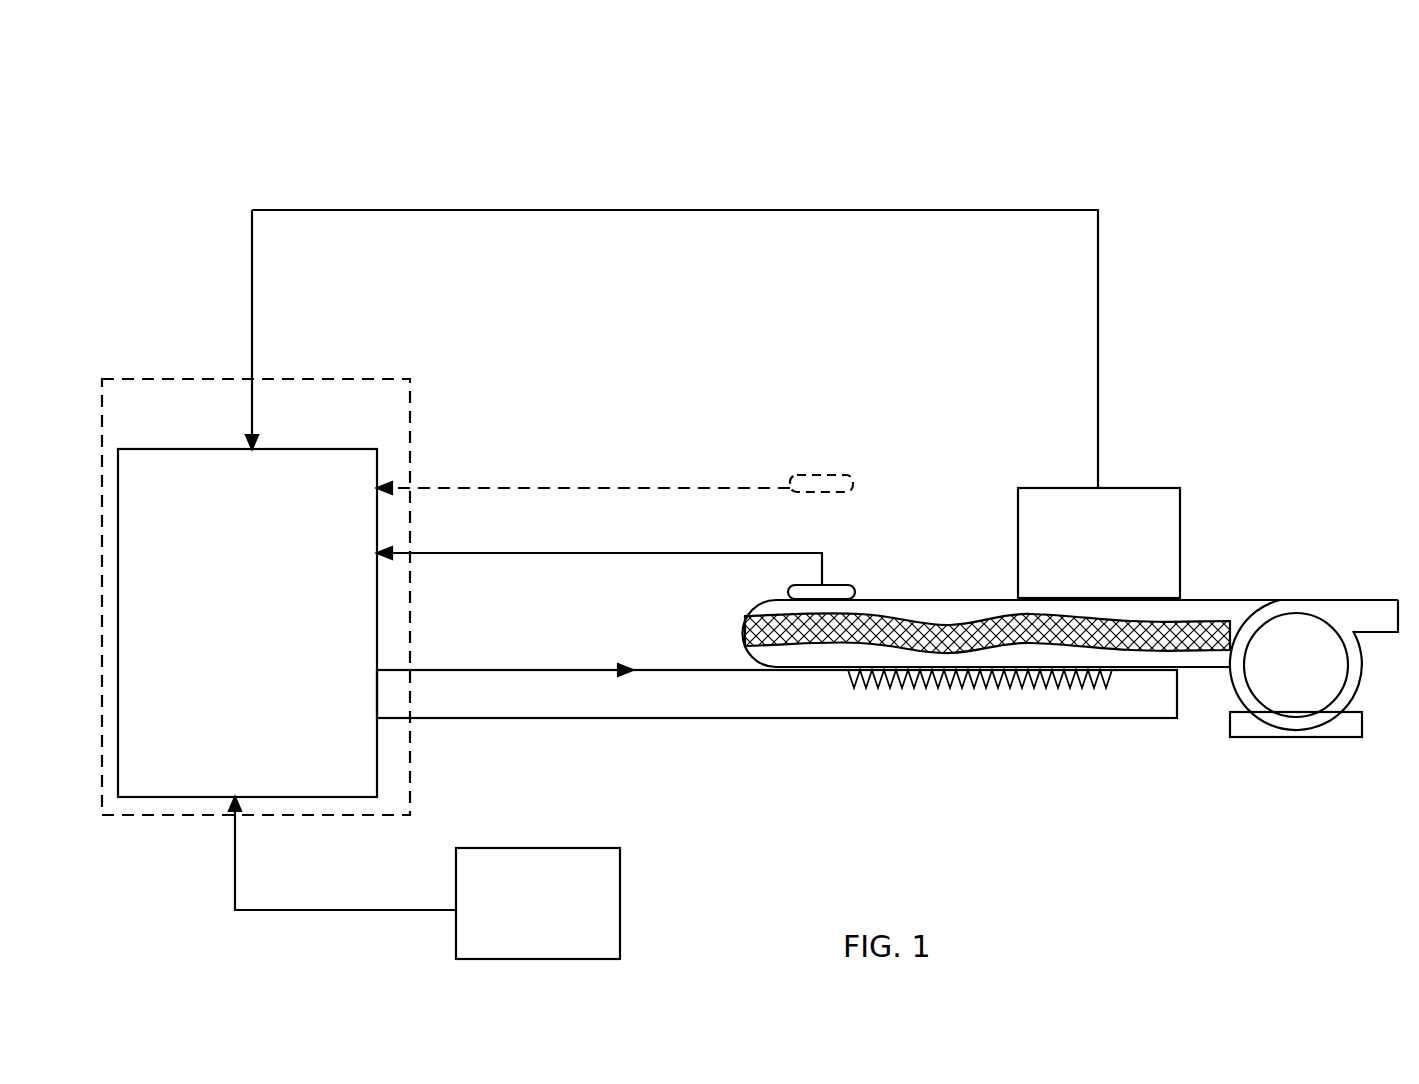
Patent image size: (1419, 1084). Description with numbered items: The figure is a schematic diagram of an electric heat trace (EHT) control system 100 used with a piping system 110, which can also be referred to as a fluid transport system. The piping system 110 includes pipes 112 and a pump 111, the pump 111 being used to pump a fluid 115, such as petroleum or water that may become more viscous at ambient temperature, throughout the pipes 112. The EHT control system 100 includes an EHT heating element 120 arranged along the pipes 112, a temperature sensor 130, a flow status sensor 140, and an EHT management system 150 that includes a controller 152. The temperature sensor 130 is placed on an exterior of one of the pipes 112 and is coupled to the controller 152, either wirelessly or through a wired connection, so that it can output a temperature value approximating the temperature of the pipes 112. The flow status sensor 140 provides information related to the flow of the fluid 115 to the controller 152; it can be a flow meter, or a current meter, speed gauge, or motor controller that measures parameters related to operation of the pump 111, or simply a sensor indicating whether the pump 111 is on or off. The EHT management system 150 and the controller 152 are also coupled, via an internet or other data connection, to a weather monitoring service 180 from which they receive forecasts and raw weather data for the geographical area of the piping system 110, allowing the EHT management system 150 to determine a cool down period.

The electric heat trace (EHT) control system 100 is at (184, 84).
The piping system 110 is at (1203, 687).
The pump 111 is at (1362, 648).
The pipes 112 is at (745, 618).
The fluid 115 is at (1208, 622).
The EHT heating element 120 is at (672, 720).
The temperature sensor 130 is at (850, 478).
The flow status sensor 140 is at (1180, 512).
The EHT management system 150 is at (410, 379).
The controller 152 is at (191, 449).
The weather monitoring service 180 is at (620, 872).